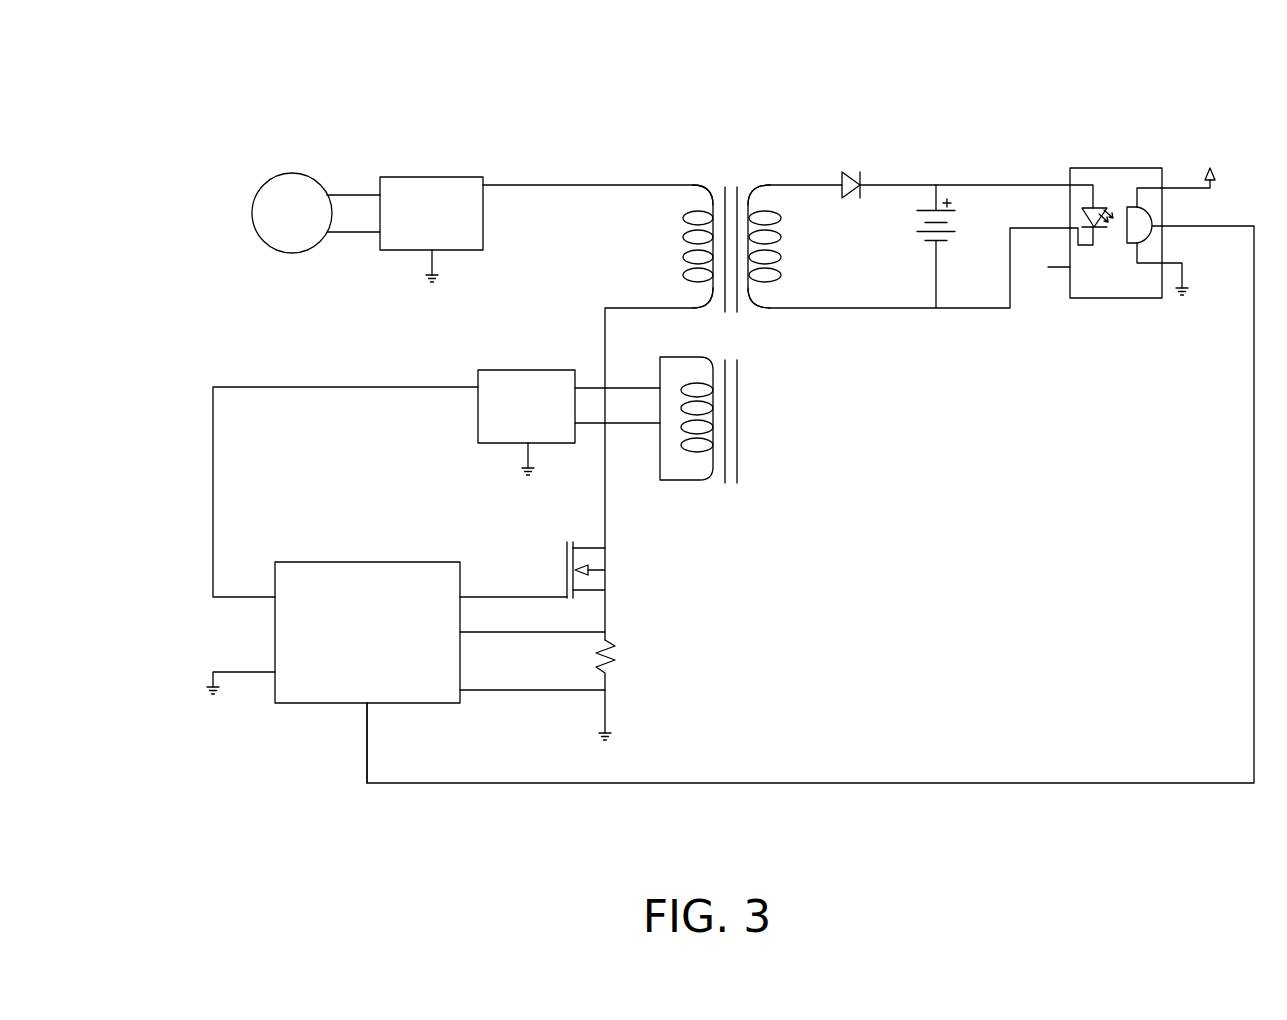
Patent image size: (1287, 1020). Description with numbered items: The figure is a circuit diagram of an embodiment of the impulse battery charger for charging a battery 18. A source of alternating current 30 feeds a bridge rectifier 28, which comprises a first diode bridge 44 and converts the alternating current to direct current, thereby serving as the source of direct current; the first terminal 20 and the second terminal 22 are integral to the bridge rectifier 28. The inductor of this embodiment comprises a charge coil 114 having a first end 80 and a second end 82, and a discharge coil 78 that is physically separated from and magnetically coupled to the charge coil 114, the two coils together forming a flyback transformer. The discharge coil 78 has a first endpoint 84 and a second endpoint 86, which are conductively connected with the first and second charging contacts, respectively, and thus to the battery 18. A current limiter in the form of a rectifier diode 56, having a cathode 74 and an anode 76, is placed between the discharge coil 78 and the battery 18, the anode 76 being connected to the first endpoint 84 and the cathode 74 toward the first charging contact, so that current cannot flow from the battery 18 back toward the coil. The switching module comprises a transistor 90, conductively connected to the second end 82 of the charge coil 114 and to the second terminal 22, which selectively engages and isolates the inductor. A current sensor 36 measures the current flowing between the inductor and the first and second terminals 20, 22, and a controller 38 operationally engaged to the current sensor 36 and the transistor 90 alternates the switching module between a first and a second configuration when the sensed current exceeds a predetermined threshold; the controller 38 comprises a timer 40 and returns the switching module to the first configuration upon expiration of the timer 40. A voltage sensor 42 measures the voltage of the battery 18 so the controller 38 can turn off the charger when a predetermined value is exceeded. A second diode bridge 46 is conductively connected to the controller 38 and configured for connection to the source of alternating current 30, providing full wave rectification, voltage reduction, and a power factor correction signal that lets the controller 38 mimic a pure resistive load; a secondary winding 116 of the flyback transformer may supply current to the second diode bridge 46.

The source of alternating current 30 is at (277, 180).
The first terminal 20 is at (380, 195).
The second terminal 22 is at (380, 233).
The bridge rectifier 28 is at (427, 177).
The first diode bridge 44 is at (480, 177).
The charge coil 114 is at (697, 237).
The first end 80 is at (693, 183).
The second end 82 is at (697, 309).
The first endpoint 84 is at (770, 183).
The second endpoint 86 is at (767, 310).
The discharge coil 78 is at (773, 237).
The anode 76 is at (841, 184).
The rectifier diode 56 is at (860, 184).
The cathode 74 is at (863, 183).
The battery 18 is at (953, 224).
The voltage sensor 42 is at (1120, 168).
The second diode bridge 46 is at (480, 372).
The secondary winding 116 is at (702, 482).
The controller 38 is at (275, 703).
The timer 40 is at (320, 703).
The transistor 90 is at (605, 560).
The current sensor 36 is at (617, 660).